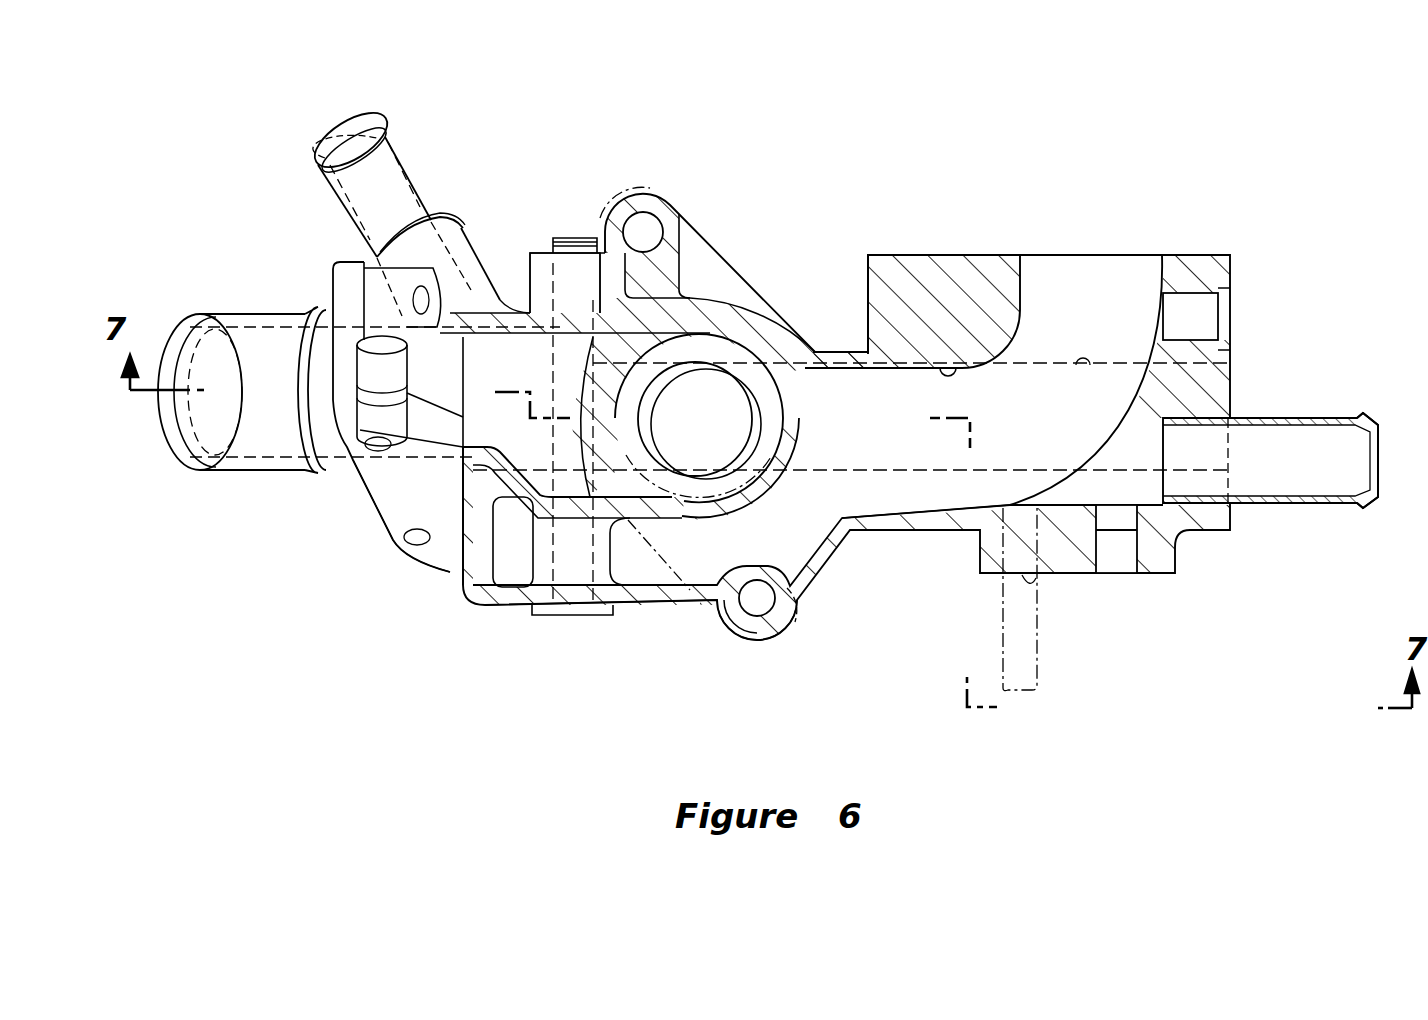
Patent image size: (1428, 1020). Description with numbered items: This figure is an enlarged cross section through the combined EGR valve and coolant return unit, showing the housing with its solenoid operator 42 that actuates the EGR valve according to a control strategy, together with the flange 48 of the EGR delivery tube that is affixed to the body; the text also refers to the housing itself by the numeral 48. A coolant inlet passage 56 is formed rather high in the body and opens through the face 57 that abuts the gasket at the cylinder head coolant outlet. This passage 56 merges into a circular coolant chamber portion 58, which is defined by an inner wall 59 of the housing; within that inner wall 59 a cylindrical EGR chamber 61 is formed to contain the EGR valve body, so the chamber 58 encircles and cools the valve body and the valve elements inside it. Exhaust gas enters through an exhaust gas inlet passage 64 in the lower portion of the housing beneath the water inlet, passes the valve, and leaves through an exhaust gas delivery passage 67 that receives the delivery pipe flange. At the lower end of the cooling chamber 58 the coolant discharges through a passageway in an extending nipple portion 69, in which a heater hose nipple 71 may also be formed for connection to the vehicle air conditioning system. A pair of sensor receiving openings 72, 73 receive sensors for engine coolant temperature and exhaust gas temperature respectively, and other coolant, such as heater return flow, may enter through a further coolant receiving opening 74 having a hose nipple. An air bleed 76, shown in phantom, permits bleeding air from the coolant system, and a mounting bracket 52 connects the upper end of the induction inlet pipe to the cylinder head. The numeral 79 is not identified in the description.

The solenoid operator 42 is at (790, 588).
The flange of the EGR delivery tube 48 is at (889, 532).
The mounting bracket 52 is at (393, 507).
The coolant inlet passage 56 is at (955, 368).
The face 57 is at (915, 253).
The circular coolant chamber portion 58 is at (650, 575).
The inner wall 59 is at (567, 312).
The cylindrical EGR chamber 61 is at (672, 392).
The exhaust gas inlet passage 64 is at (1083, 367).
The exhaust gas delivery passage 67 is at (455, 440).
The nipple portion 69 is at (252, 472).
The heater hose nipple 71 is at (405, 160).
The sensor receiving opening 72 is at (1236, 312).
The sensor receiving opening 73 is at (1137, 552).
The coolant receiving opening 74 is at (1147, 453).
The air bleed 76 is at (1040, 590).
The hose connector end 79 is at (1345, 418).